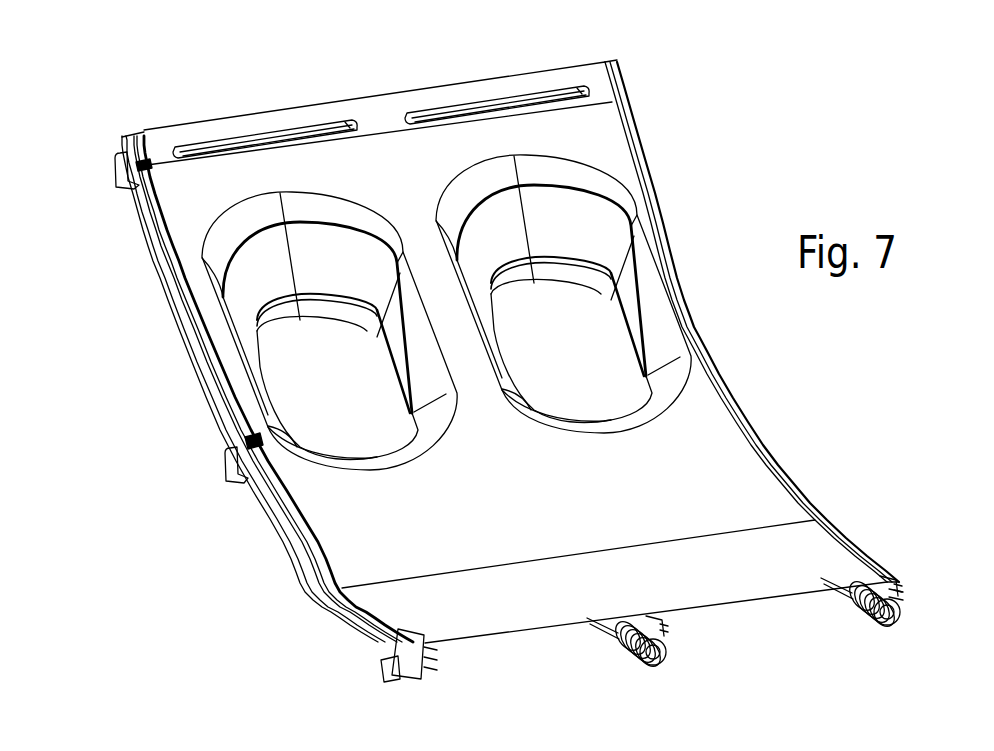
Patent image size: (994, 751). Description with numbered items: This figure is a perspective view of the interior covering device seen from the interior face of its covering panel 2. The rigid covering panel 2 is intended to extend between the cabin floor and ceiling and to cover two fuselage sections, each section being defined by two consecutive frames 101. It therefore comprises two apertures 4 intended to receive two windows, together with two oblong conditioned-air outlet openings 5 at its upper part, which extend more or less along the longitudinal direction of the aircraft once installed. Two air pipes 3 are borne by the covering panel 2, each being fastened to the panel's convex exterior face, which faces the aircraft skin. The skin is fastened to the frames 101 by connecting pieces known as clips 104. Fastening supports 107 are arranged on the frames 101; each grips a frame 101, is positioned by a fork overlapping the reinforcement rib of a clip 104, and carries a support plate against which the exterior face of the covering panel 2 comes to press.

The covering panel 2 is at (795, 517).
The air pipe 3 is at (603, 624).
The aperture 4 is at (572, 368).
The conditioned-air outlet opening 5 is at (265, 132).
The frame 101 is at (370, 626).
The clip 104 is at (114, 183).
The fastening support 107 is at (246, 441).